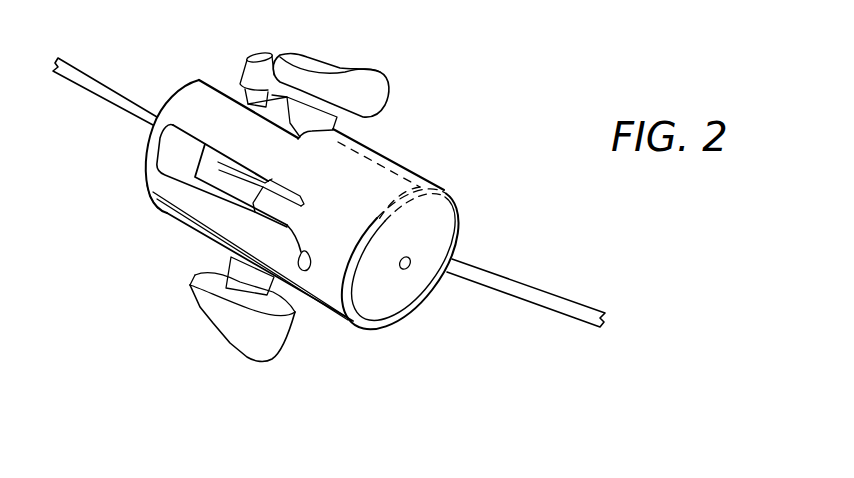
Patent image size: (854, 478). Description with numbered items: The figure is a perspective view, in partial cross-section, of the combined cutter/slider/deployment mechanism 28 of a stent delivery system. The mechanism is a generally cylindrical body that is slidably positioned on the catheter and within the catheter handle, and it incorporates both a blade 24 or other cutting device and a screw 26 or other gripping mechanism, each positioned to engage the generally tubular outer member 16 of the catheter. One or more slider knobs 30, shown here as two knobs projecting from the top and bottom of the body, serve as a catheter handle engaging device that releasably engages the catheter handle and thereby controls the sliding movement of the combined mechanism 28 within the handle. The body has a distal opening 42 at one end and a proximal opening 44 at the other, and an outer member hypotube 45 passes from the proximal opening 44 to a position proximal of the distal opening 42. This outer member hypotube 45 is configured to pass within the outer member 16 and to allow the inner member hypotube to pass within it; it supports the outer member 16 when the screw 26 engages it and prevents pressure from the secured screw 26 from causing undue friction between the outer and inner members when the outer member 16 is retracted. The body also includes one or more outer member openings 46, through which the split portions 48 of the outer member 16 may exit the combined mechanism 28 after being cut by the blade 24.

The outer member 16 is at (107, 80).
The blade 24 is at (302, 187).
The screw 26 is at (270, 55).
The combined cutter/slider/deployment mechanism 28 is at (477, 85).
The slider knob 30 is at (350, 67).
The distal opening 42 is at (137, 118).
The proximal opening 44 is at (407, 266).
The outer member hypotube 45 is at (302, 187).
The outer member opening 46 is at (217, 183).
The split portion 48 is at (290, 224).